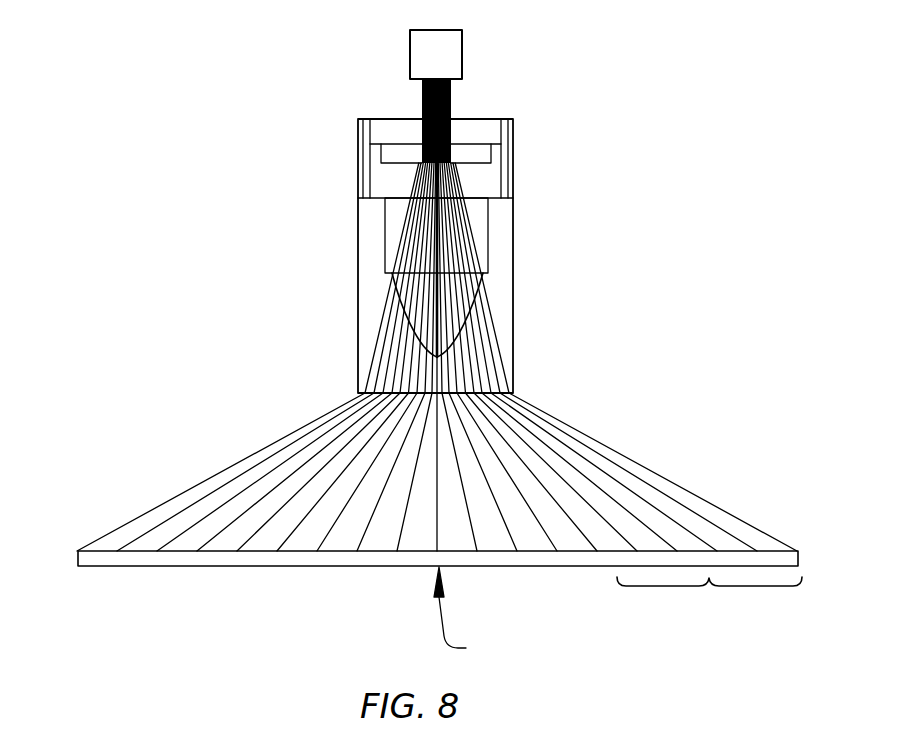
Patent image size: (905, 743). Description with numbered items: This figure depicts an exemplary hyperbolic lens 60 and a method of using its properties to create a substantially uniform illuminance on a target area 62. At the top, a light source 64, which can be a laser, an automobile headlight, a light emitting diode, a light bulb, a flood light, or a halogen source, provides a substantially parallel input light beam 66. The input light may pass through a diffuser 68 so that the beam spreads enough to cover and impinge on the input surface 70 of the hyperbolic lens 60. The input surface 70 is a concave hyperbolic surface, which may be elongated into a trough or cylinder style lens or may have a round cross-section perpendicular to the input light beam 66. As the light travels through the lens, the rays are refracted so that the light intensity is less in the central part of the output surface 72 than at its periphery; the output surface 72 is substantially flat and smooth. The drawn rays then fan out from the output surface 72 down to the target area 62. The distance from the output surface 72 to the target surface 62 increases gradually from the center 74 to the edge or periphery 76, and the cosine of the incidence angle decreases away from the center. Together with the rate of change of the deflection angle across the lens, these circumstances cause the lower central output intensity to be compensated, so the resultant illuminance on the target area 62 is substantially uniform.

The hyperbolic lens 60 is at (503, 293).
The target area 62 is at (97, 559).
The light source 64 is at (452, 57).
The input light beam 66 is at (450, 98).
The diffuser 68 is at (408, 163).
The input surface 70 is at (392, 283).
The output surface 72 is at (545, 405).
The center 74 is at (466, 615).
The periphery 76 is at (709, 599).